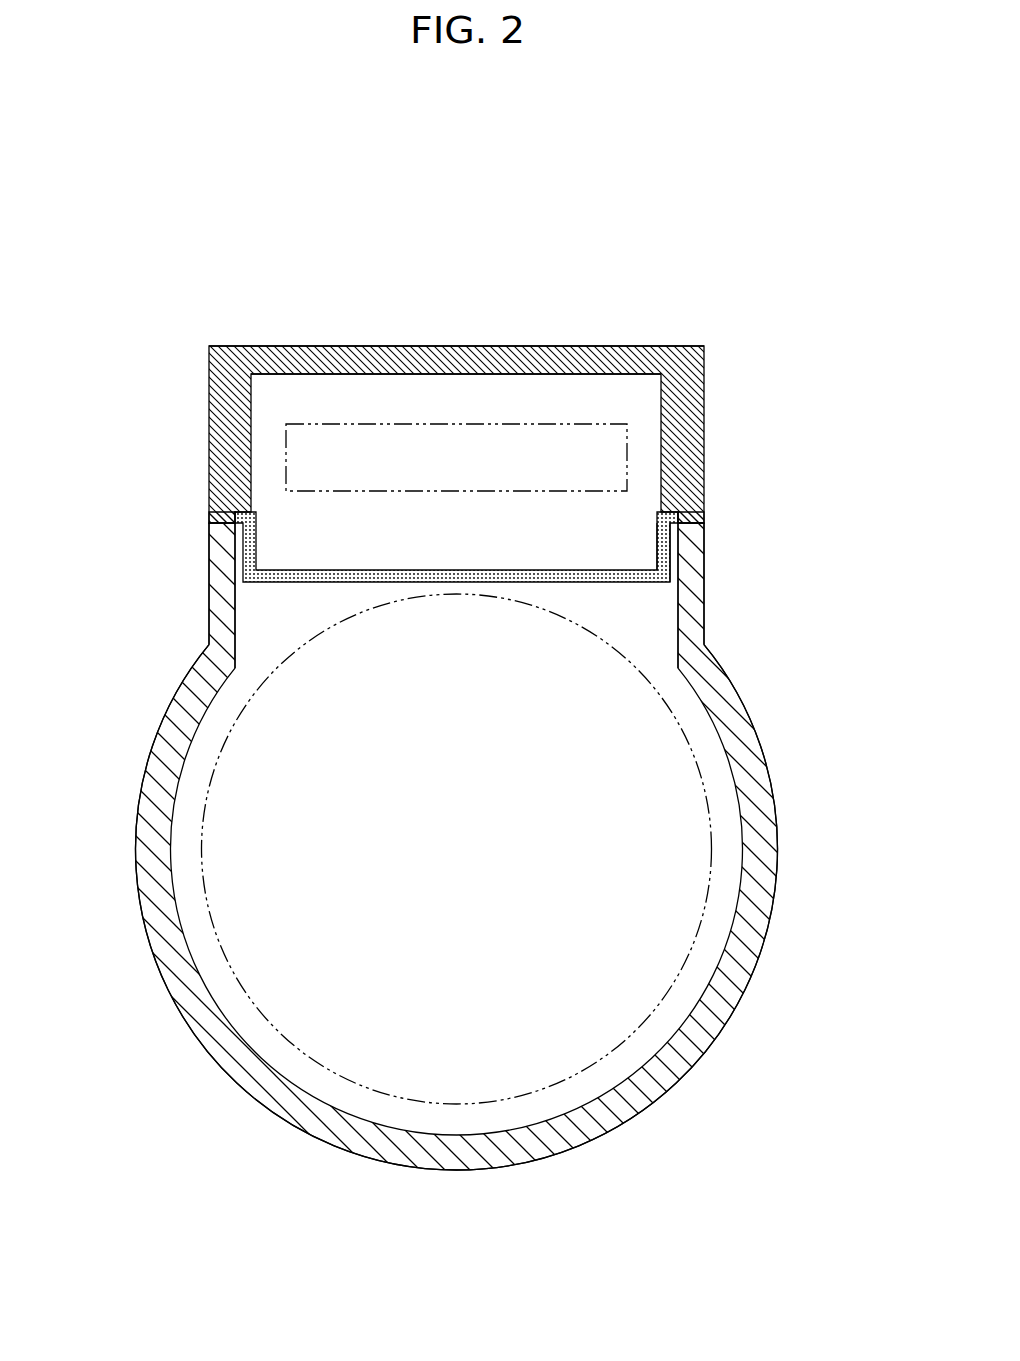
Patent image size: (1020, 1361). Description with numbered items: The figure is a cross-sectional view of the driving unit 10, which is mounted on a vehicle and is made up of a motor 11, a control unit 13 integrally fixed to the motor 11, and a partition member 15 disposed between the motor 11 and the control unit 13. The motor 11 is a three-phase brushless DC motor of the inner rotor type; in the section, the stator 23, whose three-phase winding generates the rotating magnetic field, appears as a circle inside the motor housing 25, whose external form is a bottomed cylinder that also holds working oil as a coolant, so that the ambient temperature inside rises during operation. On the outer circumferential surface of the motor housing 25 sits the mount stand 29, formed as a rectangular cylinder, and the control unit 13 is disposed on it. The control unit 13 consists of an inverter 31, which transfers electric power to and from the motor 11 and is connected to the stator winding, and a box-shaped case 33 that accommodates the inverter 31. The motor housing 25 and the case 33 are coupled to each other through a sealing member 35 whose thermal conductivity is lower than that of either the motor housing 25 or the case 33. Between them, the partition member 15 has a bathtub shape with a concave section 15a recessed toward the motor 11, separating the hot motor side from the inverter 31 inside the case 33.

The driving unit 10 is at (683, 228).
The motor 11 is at (733, 574).
The control unit 13 is at (697, 339).
The partition member 15 is at (292, 568).
The concave section 15a is at (657, 541).
The stator 23 is at (203, 837).
The motor housing 25 is at (163, 727).
The mount stand 29 is at (208, 593).
The inverter 31 is at (445, 423).
The case 33 is at (590, 345).
The sealing member 35 is at (211, 517).